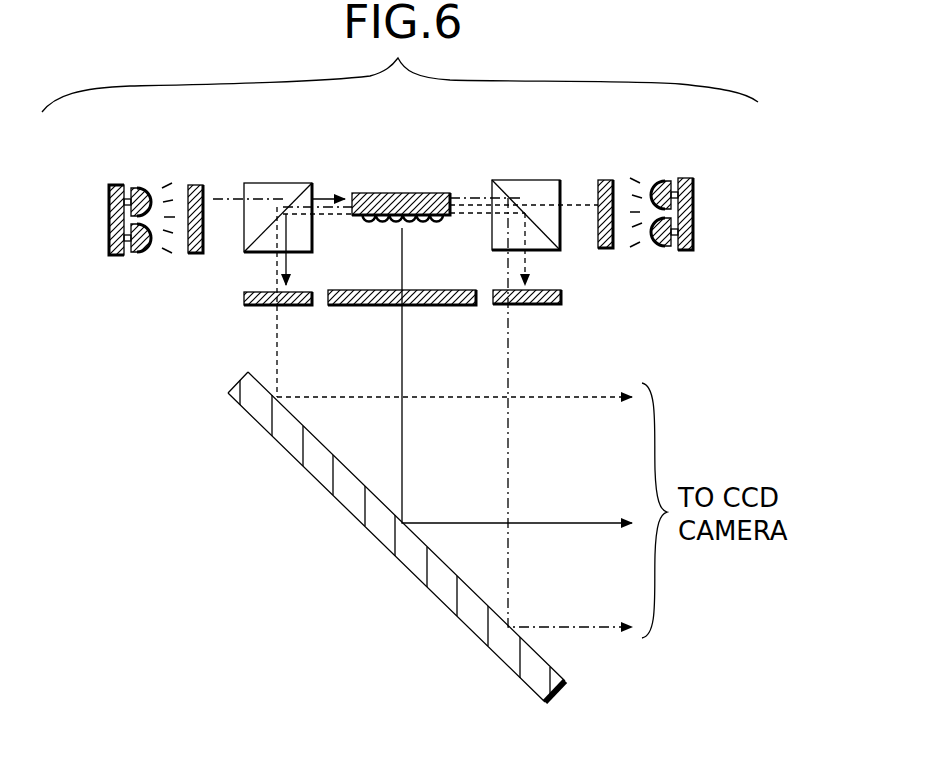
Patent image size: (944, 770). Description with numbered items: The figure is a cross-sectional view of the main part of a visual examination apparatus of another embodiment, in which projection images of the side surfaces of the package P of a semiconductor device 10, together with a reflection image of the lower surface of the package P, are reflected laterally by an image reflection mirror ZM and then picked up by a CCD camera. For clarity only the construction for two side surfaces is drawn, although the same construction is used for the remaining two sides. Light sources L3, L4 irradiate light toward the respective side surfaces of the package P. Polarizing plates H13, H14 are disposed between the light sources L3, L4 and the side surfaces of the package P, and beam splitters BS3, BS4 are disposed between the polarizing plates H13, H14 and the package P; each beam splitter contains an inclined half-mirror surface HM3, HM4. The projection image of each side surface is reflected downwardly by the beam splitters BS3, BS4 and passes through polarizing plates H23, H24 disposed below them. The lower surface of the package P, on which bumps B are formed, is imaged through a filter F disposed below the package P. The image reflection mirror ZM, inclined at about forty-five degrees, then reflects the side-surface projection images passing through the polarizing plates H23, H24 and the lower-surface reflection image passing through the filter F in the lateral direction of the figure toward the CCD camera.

The semiconductor device 10 is at (356, 168).
The light source L3 is at (140, 183).
The polarizing plate H13 is at (196, 184).
The beam splitter BS3 is at (272, 182).
The half mirror HM3 is at (254, 236).
The polarizing plate H23 is at (253, 306).
The package P is at (403, 193).
The bumps B is at (366, 228).
The filter F is at (342, 306).
The beam splitter BS4 is at (532, 180).
The half mirror HM4 is at (546, 230).
The polarizing plate H24 is at (548, 305).
The polarizing plate H14 is at (606, 180).
The light source L4 is at (659, 180).
The image reflection mirror ZM is at (292, 455).